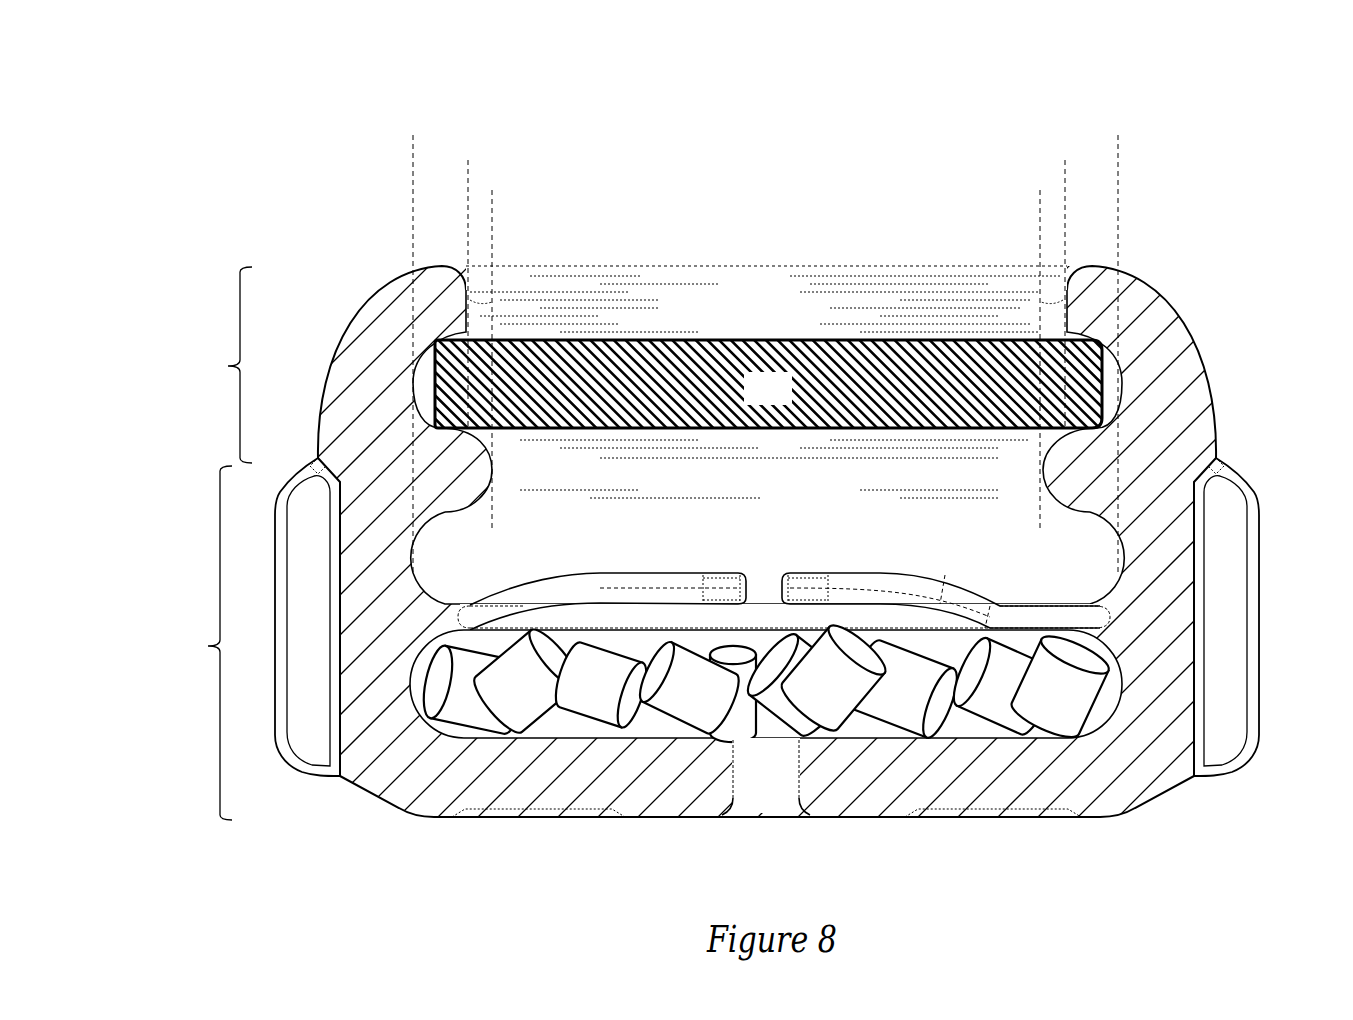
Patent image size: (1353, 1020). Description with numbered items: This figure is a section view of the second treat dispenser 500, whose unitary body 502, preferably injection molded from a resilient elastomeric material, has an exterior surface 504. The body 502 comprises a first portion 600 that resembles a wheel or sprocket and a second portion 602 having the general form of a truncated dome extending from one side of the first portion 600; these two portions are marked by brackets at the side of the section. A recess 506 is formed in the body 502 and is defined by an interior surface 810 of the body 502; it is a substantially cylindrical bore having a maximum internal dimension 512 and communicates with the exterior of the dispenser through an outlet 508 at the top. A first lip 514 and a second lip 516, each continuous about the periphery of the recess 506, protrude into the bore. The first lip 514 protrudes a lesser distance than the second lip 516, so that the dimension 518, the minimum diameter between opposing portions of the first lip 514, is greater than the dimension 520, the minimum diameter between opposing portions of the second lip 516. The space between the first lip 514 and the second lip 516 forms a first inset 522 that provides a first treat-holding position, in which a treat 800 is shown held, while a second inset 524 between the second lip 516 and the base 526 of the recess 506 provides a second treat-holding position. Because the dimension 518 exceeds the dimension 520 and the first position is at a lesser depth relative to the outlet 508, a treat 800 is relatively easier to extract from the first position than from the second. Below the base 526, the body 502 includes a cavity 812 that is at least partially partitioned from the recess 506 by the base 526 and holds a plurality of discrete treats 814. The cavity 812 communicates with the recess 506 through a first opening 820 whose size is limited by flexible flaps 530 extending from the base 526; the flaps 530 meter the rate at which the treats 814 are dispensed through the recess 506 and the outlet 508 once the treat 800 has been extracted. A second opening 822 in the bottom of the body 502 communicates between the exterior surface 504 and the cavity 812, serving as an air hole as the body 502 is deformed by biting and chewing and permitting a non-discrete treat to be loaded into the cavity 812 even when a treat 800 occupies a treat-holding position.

The second treat dispenser 500 is at (1104, 105).
The unitary body 502 is at (1224, 420).
The exterior surface 504 is at (333, 396).
The recess 506 is at (847, 293).
The outlet 508 is at (980, 268).
The maximum internal dimension 512 is at (1117, 143).
The first lip 514 is at (490, 306).
The second lip 516 is at (498, 488).
The dimension 518 is at (469, 171).
The dimension 520 is at (1039, 201).
The first inset 522 is at (422, 384).
The second inset 524 is at (428, 558).
The base 526 is at (942, 601).
The flexible flaps 530 is at (712, 574).
The first portion 600 is at (195, 643).
The second portion 602 is at (215, 365).
The treat 800 is at (750, 402).
The interior surface 810 is at (1012, 460).
The cavity 812 is at (1098, 712).
The discrete treats 814 is at (518, 704).
The first opening 820 is at (502, 609).
The second opening 822 is at (769, 789).